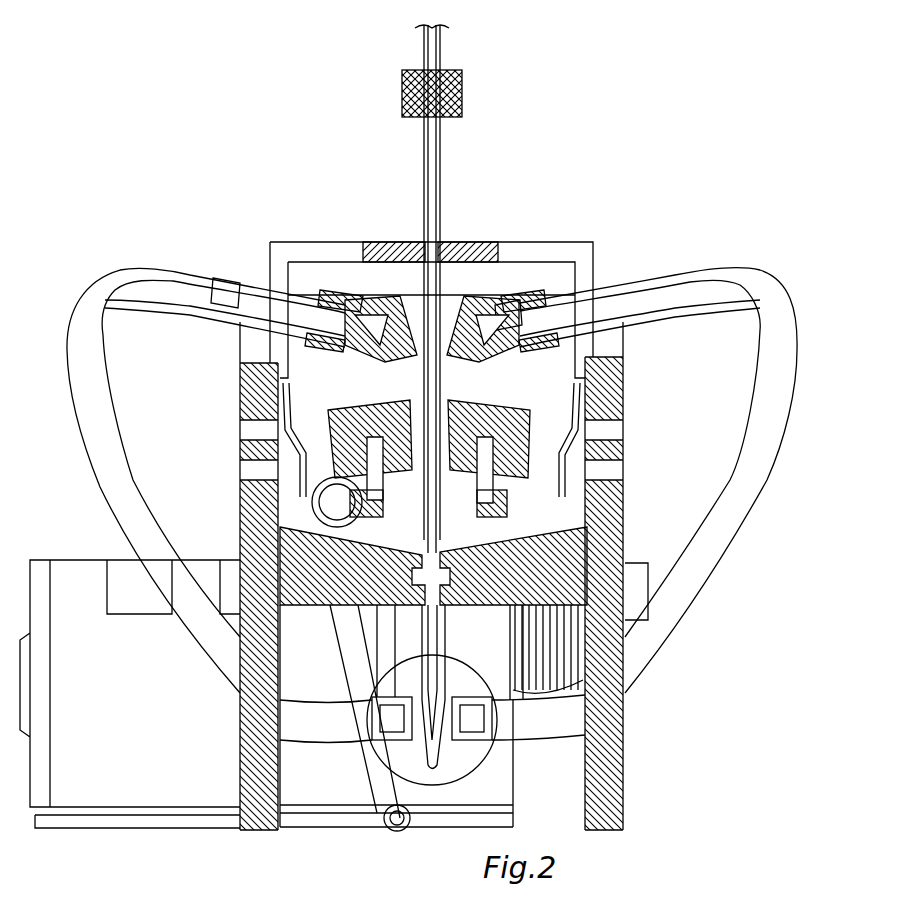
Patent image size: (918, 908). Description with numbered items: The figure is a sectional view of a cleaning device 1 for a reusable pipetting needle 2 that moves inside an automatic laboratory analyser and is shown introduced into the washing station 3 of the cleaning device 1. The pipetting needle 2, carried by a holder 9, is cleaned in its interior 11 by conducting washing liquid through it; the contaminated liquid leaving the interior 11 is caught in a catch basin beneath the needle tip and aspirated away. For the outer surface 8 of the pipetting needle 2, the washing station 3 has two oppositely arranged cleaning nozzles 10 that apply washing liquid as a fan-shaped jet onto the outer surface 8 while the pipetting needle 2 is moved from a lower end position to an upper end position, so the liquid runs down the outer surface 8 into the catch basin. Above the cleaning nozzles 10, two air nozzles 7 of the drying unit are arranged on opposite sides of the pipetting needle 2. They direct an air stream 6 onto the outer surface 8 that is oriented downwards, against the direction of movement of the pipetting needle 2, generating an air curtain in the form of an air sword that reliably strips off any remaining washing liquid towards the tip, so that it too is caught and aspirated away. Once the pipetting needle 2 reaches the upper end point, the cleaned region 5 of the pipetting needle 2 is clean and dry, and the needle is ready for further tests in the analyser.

The cleaning device 1 is at (312, 125).
The pipetting needle 2 is at (440, 165).
The washing station 3 is at (447, 313).
The cleaned region of the pipetting needle 5 is at (420, 473).
The air stream 6 is at (422, 363).
The air nozzle 7 is at (517, 360).
The outer surface 8 is at (455, 272).
The holder 9 is at (462, 92).
The cleaning nozzle 10 is at (448, 412).
The interior 11 is at (424, 178).